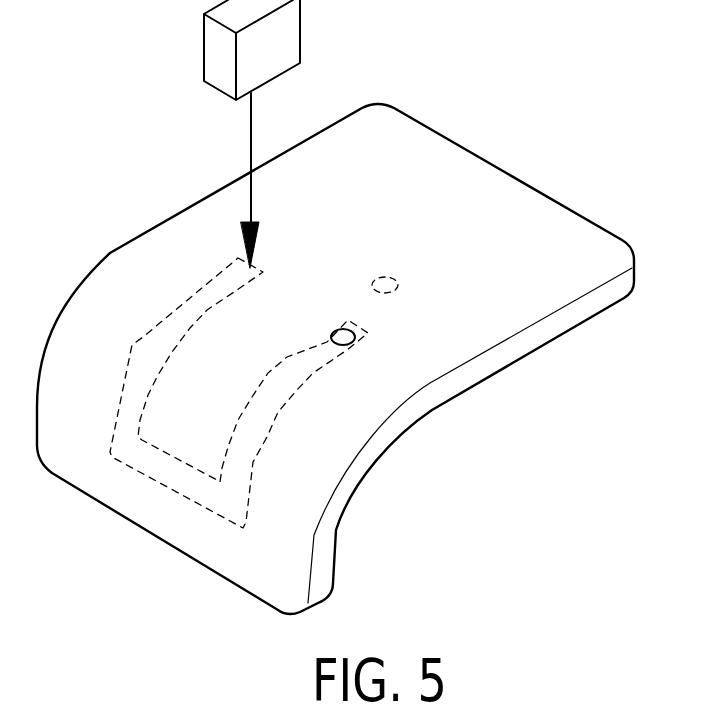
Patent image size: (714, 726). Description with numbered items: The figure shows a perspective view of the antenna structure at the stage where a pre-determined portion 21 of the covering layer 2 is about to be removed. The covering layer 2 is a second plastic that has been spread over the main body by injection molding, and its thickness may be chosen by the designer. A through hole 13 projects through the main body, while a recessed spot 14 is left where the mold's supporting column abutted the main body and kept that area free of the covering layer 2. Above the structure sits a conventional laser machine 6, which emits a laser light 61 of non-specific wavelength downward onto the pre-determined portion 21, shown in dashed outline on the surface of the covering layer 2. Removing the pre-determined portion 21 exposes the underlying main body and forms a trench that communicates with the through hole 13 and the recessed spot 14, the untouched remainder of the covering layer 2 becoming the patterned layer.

The covering layer 2 is at (457, 182).
The laser machine 6 is at (215, 47).
The laser light 61 is at (248, 142).
The through hole 13 is at (341, 329).
The recessed spot 14 is at (385, 294).
The pre-determined portion 21 is at (130, 344).